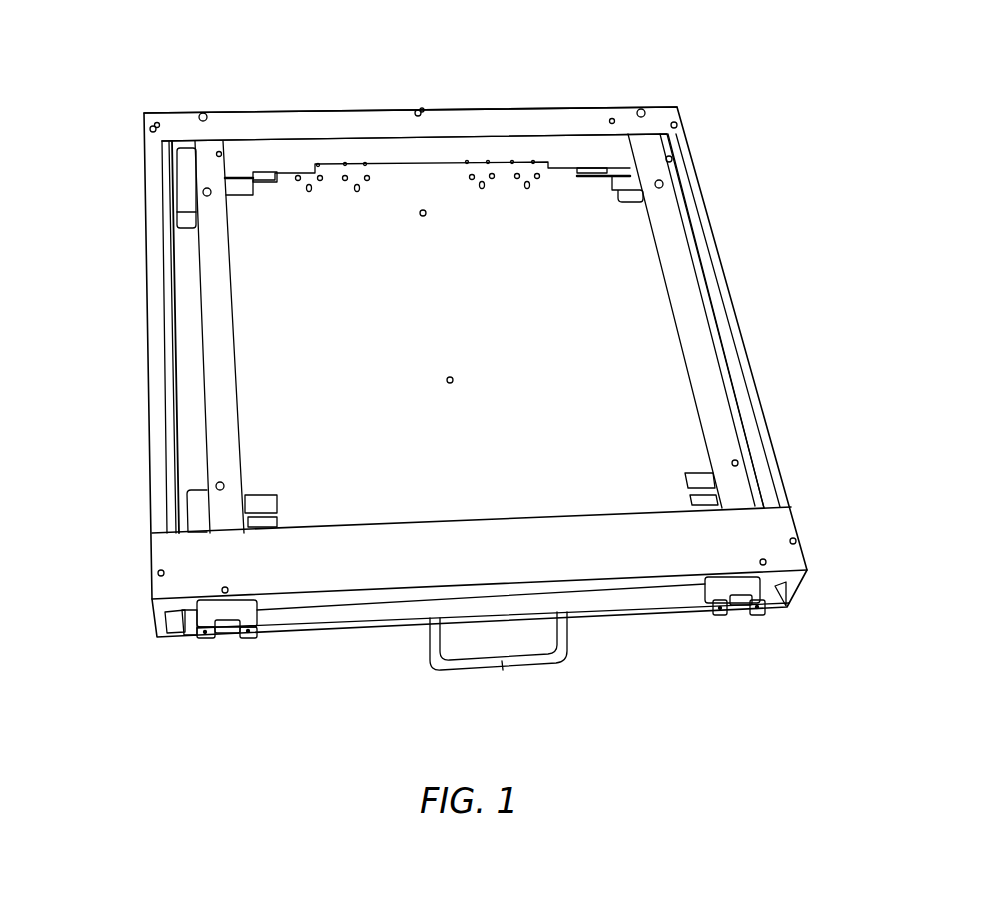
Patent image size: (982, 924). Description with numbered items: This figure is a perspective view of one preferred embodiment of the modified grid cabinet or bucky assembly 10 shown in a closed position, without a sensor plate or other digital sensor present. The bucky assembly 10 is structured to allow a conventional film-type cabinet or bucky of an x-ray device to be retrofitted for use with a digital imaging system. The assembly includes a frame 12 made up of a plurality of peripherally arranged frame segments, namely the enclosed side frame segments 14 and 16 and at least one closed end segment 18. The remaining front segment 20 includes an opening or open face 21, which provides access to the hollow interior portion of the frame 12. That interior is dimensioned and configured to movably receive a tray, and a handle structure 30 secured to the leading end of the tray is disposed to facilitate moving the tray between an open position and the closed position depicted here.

The bucky assembly 10 is at (713, 135).
The frame 12 is at (722, 240).
The side frame segment 14 is at (743, 338).
The side frame segment 16 is at (147, 313).
The closed end segment 18 is at (329, 111).
The front end segment 20 is at (613, 593).
The open face 21 is at (777, 611).
The handle structure 30 is at (527, 672).